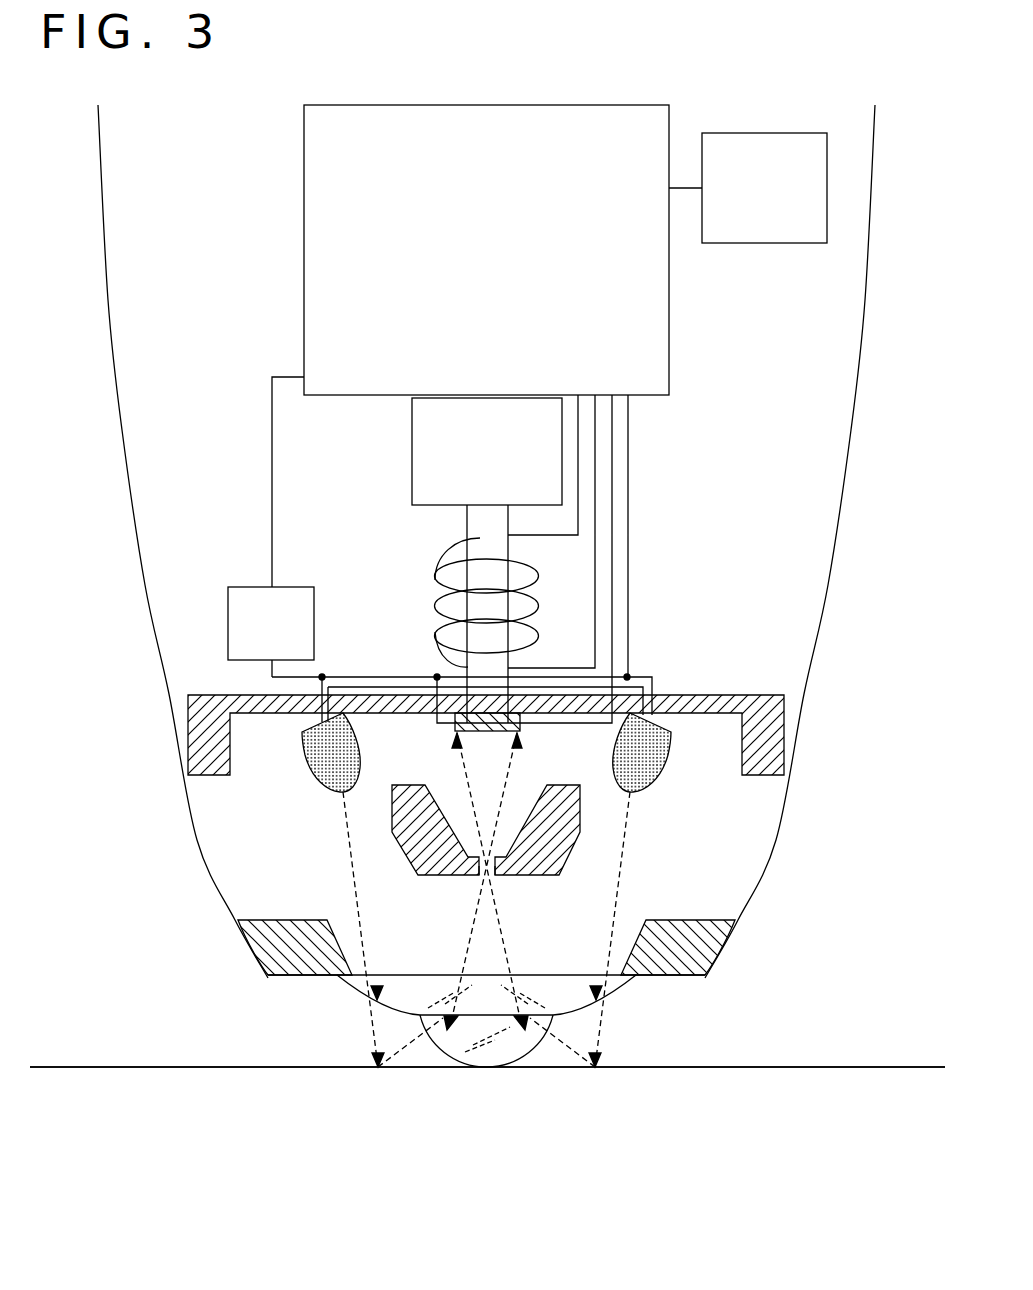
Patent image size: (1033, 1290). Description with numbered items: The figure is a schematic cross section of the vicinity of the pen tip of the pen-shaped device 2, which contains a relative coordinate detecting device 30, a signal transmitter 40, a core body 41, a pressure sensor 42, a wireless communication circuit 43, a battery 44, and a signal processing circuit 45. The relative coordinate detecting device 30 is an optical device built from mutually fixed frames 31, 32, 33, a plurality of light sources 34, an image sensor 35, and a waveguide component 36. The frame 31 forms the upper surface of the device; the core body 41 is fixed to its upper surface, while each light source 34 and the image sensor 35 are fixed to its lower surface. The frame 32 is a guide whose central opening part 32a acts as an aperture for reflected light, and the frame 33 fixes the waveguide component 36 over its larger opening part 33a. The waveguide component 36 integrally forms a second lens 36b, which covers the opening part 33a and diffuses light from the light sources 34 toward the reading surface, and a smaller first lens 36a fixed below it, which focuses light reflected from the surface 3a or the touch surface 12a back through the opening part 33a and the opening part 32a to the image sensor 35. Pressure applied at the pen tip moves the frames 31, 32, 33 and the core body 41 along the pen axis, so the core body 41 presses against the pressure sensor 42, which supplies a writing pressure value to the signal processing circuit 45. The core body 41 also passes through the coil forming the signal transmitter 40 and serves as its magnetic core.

The pen-shaped device 2 is at (838, 521).
The relative coordinate detecting device 30 is at (115, 693).
The frame 31 is at (750, 695).
The frame 32 is at (540, 877).
The opening part 32a is at (486, 873).
The frame 33 is at (722, 920).
The opening part 33a is at (628, 975).
The light source 34 is at (341, 792).
The image sensor 35 is at (487, 731).
The waveguide component 36 is at (600, 1125).
The first lens 36a is at (500, 1042).
The second lens 36b is at (570, 1002).
The signal transmitter 40 is at (437, 612).
The core body 41 is at (467, 522).
The pressure sensor 42 is at (412, 458).
The wireless communication circuit 43 is at (803, 233).
The battery 44 is at (228, 621).
The signal processing circuit 45 is at (669, 343).
The touch surface 12a is at (858, 1065).
The surface 3a is at (487, 1026).